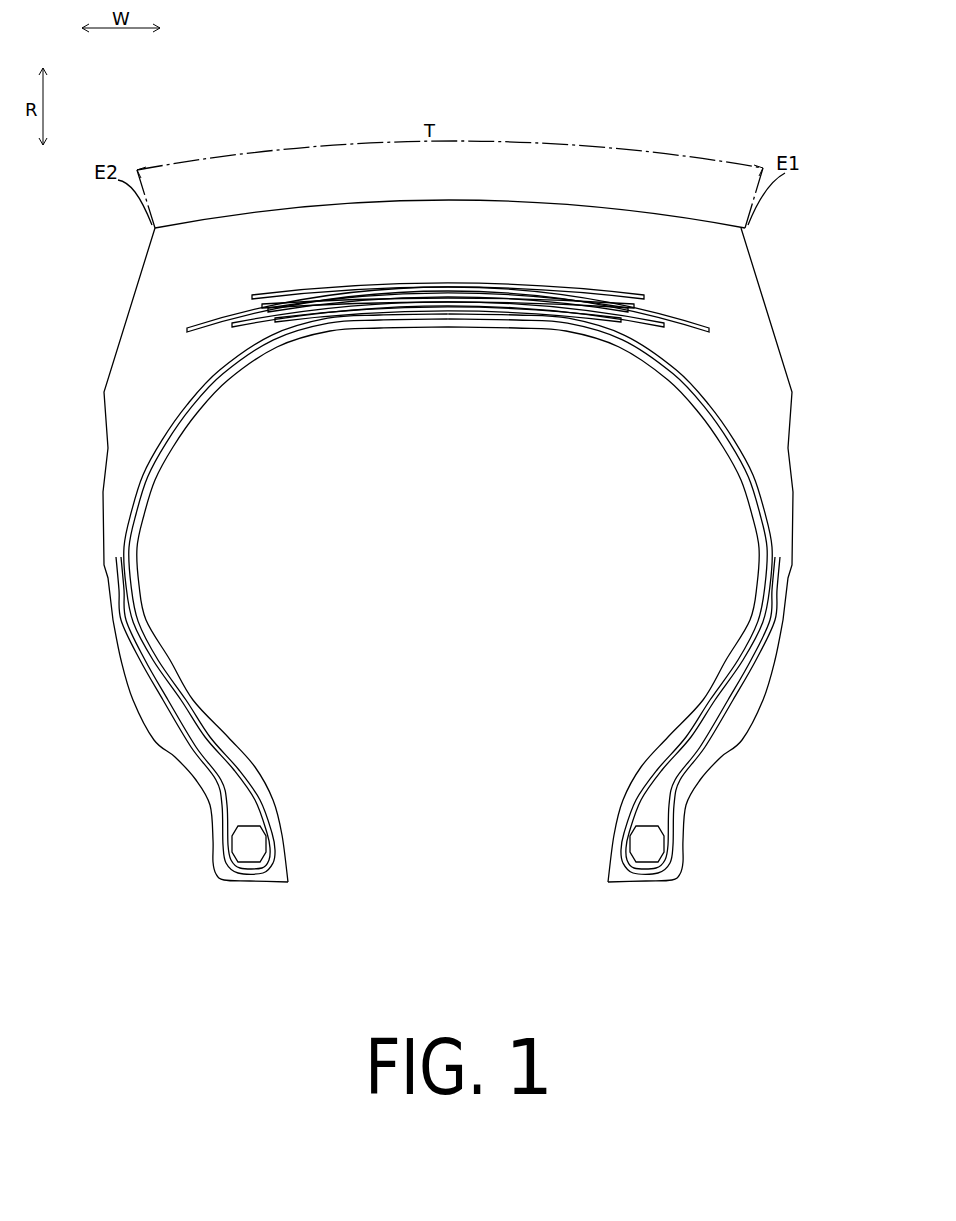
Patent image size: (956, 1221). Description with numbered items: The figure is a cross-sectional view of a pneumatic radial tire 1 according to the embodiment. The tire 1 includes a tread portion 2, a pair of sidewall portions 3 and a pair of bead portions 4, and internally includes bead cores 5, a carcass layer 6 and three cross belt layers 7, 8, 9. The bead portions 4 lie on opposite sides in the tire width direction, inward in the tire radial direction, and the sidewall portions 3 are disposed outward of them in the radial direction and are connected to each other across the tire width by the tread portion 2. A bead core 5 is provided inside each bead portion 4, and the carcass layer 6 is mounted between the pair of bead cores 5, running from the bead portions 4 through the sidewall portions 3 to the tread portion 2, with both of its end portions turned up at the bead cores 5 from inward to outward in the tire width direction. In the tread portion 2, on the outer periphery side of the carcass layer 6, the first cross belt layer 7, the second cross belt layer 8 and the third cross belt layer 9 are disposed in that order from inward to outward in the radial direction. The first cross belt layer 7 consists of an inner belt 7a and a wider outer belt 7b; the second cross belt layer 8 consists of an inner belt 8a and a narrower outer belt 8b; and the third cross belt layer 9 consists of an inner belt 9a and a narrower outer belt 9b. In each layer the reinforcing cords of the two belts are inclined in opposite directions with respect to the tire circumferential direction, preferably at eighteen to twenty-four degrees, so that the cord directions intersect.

The tire 1 is at (788, 80).
The tread portion 2 is at (680, 178).
The sidewall portions 3 is at (81, 491).
The bead portions 4 is at (205, 891).
The bead cores 5 is at (250, 850).
The carcass layer 6 is at (233, 737).
The first cross belt layer 7 is at (372, 369).
The belt 7a is at (336, 313).
The belt 7b is at (343, 308).
The second cross belt layer 8 is at (468, 369).
The belt 8a is at (426, 300).
The belt 8b is at (432, 296).
The third cross belt layer 9 is at (557, 369).
The belt 9a is at (510, 290).
The belt 9b is at (516, 286).